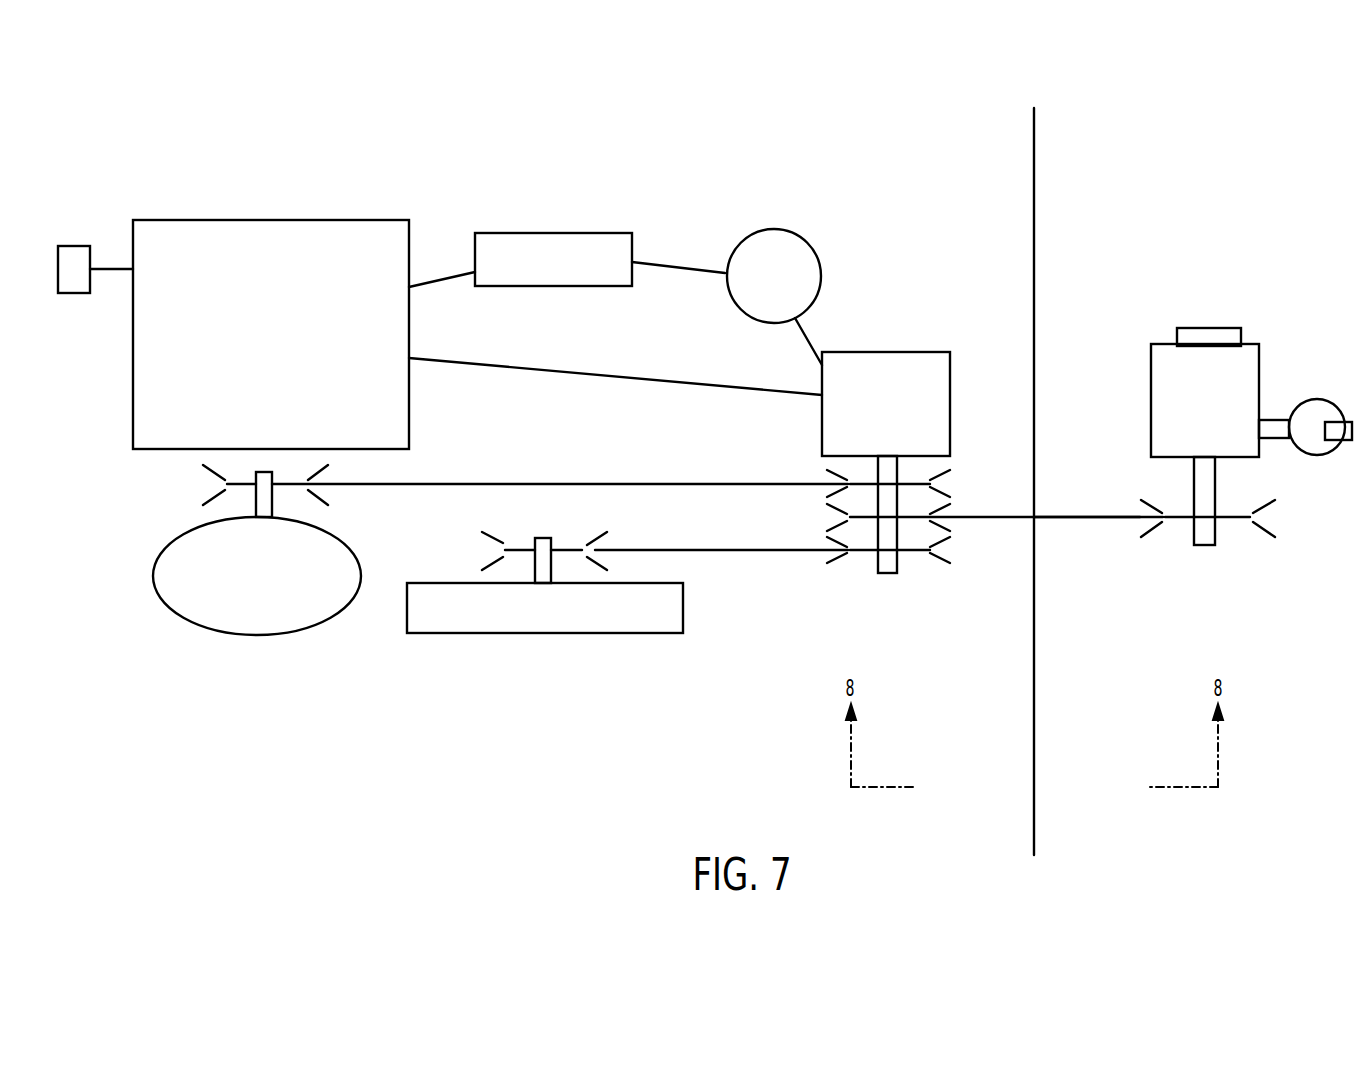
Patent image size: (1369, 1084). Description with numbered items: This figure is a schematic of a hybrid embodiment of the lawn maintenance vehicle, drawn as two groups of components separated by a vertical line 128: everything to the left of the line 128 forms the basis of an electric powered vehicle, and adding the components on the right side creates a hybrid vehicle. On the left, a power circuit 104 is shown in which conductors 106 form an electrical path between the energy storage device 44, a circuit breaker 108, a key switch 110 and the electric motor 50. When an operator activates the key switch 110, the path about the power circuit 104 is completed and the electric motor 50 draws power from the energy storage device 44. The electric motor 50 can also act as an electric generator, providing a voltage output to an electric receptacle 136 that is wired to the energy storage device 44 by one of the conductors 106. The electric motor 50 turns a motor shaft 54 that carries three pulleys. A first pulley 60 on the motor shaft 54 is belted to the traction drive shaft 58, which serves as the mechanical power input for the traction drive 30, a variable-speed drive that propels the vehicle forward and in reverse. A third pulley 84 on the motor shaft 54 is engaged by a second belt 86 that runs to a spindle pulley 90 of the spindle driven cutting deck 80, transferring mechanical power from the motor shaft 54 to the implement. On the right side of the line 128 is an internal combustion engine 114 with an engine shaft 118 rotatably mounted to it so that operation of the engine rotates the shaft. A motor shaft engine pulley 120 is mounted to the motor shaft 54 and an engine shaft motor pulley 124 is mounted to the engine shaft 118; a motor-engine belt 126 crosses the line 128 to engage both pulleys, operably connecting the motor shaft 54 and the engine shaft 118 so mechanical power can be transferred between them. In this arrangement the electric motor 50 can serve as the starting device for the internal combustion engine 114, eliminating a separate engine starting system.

The traction drive 30 is at (255, 636).
The energy storage device 44 is at (265, 220).
The electric motor 50 is at (912, 352).
The motor shaft 54 is at (887, 574).
The traction drive shaft 58 is at (256, 500).
The first pulley 60 is at (945, 478).
The spindle driven cutting deck 80 is at (407, 613).
The third pulley 84 is at (945, 560).
The second belt 86 is at (770, 551).
The spindle pulley 90 is at (492, 540).
The power circuit 104 is at (843, 160).
The conductors 106 is at (100, 268).
The circuit breaker 108 is at (553, 233).
The key switch 110 is at (773, 229).
The internal combustion engine 114 is at (1260, 366).
The engine shaft 118 is at (1216, 488).
The motor shaft engine pulley 120 is at (827, 508).
The engine shaft motor pulley 124 is at (1263, 527).
The motor-engine belt 126 is at (1090, 518).
The line 128 is at (1034, 822).
The electric receptacle 136 is at (66, 246).